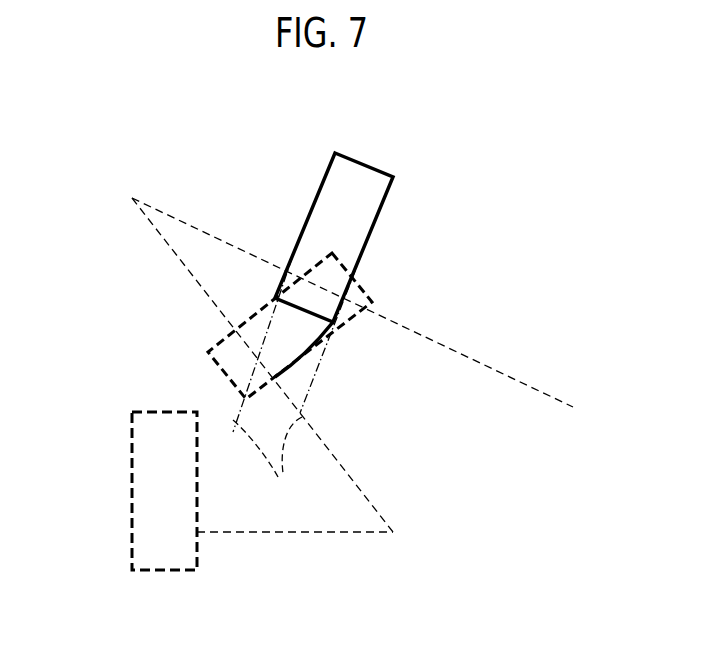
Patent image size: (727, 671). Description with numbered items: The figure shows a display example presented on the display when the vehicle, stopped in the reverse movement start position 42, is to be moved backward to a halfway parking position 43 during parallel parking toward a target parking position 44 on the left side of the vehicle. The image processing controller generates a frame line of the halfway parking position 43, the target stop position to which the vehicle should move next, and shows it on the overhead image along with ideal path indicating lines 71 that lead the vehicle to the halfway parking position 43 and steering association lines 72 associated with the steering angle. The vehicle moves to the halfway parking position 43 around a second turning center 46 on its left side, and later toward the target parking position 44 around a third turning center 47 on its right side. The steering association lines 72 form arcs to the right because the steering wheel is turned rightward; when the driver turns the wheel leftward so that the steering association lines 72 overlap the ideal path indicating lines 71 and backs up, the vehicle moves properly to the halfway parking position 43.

The reverse movement start position 42 is at (375, 177).
The halfway parking position 43 is at (355, 293).
The target parking position 44 is at (137, 480).
The second turning center 46 is at (132, 197).
The third turning center 47 is at (393, 532).
The ideal path indicating lines 71 is at (272, 303).
The steering association lines 72 is at (267, 467).